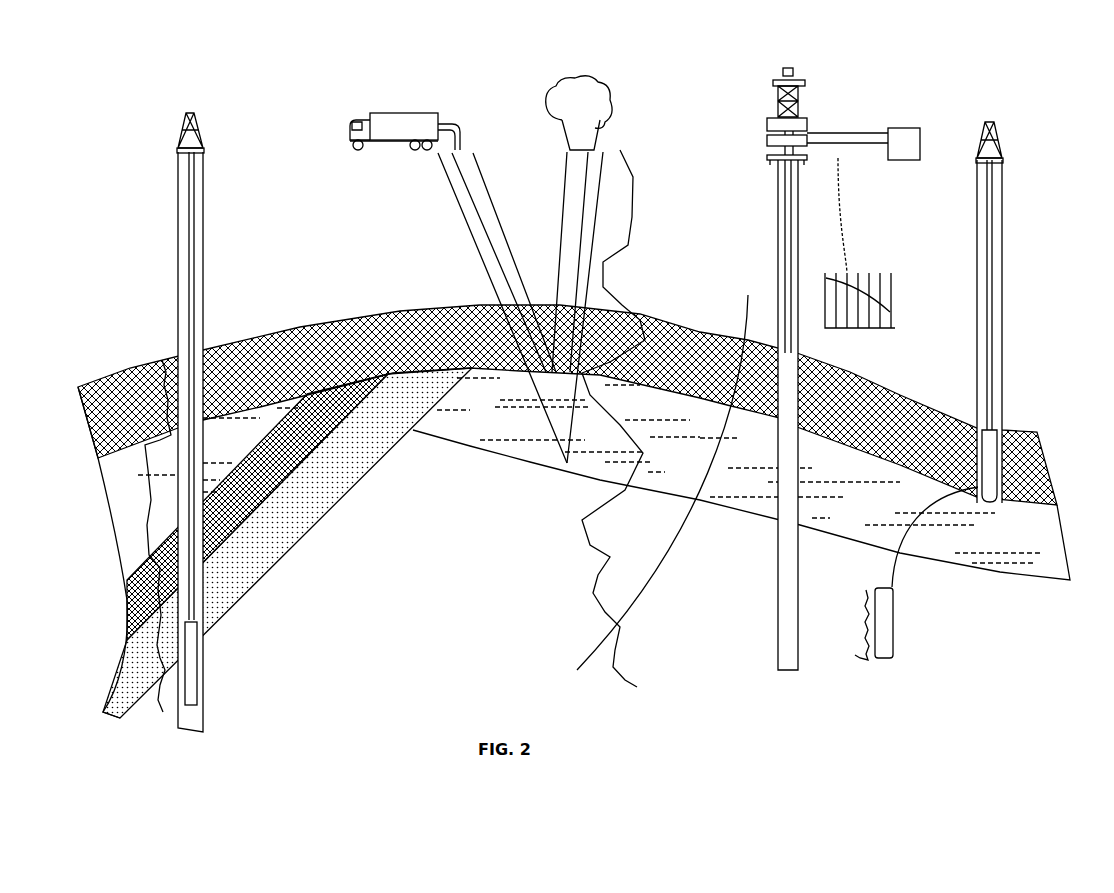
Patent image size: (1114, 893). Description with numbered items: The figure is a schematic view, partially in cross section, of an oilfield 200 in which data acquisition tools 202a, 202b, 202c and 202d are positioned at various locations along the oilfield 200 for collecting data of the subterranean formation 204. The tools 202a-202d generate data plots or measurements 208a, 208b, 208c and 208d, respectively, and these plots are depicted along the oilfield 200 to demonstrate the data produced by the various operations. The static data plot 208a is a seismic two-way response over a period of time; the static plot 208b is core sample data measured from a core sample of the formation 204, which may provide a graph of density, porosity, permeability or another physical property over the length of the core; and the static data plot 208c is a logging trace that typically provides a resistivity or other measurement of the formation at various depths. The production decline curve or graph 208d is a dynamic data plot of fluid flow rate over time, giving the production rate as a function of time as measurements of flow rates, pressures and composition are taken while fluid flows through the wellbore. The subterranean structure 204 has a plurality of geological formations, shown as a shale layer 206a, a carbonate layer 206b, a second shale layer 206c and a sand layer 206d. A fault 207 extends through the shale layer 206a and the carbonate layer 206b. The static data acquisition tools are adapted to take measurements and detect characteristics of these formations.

The oilfield 200 is at (950, 125).
The data acquisition tool 202a is at (378, 112).
The data acquisition tool 202b is at (1002, 493).
The data acquisition tool 202c is at (200, 666).
The data acquisition tool 202d is at (777, 405).
The subterranean formation 204 is at (460, 528).
The shale layer 206a is at (403, 356).
The carbonate layer 206b is at (248, 443).
The shale layer 206c is at (302, 465).
The sand layer 206d is at (355, 475).
The fault 207 is at (743, 307).
The static data plot 208a is at (607, 562).
The static plot 208b is at (866, 600).
The static data plot 208c is at (150, 490).
The production decline curve 208d is at (855, 332).